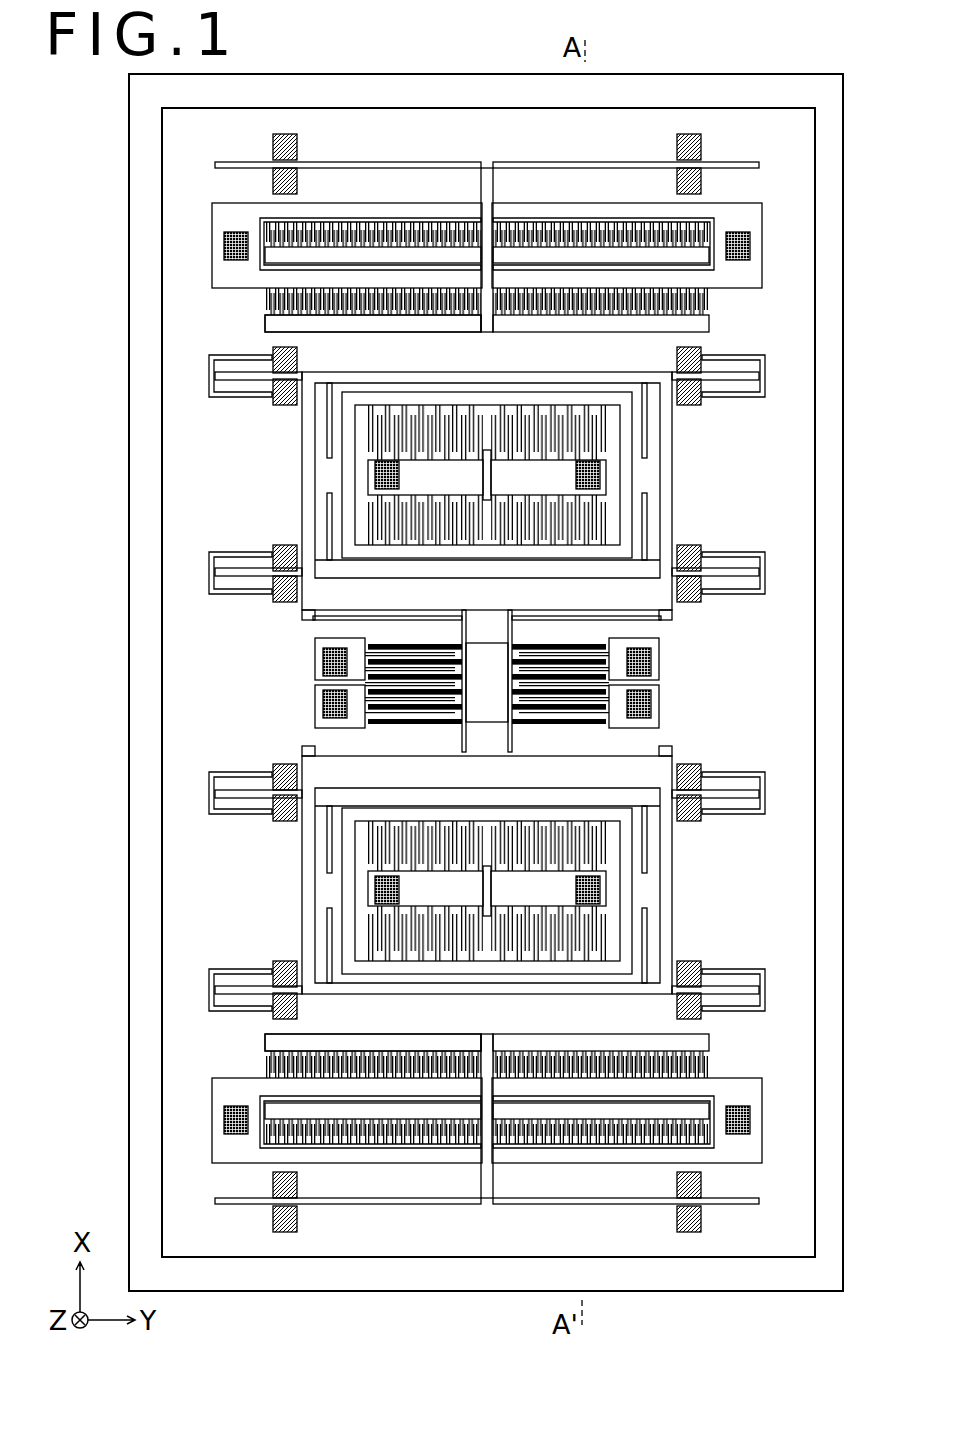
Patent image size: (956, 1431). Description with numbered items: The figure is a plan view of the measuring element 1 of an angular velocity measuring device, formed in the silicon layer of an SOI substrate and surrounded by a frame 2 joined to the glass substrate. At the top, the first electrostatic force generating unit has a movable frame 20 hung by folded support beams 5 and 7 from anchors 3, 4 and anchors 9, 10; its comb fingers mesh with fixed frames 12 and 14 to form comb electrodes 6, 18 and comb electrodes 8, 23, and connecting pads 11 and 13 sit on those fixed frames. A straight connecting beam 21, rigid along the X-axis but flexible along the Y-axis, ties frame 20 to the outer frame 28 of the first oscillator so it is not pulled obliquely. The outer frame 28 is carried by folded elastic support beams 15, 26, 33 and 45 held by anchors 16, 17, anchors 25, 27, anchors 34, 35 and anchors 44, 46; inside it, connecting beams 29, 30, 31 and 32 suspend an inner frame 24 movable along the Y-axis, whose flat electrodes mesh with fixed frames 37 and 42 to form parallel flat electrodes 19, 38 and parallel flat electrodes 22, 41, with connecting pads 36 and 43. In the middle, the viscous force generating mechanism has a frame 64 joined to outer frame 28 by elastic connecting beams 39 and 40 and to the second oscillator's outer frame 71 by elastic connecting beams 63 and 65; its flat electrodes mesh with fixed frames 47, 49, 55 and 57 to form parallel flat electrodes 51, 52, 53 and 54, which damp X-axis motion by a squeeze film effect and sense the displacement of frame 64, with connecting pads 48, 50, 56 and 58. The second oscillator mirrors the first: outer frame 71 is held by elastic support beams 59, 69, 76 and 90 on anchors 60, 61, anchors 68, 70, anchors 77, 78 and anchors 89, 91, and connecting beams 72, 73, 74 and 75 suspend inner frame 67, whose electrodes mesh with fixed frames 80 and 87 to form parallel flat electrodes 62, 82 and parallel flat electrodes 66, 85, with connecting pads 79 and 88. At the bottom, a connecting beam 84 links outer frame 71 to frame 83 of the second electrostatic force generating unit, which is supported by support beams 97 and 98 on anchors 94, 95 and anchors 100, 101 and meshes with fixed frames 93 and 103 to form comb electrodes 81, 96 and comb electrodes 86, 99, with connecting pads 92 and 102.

The measuring element 1 is at (645, 74).
The frame 2 is at (743, 108).
The anchor 3 is at (299, 148).
The anchor 4 is at (299, 181).
The support beam 5 is at (413, 162).
The comb electrode 6 is at (400, 222).
The support beam 7 is at (560, 162).
The comb electrode 8 is at (574, 222).
The anchor 9 is at (677, 147).
The anchor 10 is at (677, 181).
The connecting pad 11 is at (224, 238).
The frame 12 is at (222, 273).
The connecting pad 13 is at (750, 240).
The frame 14 is at (752, 273).
The elastic support beam 15 is at (209, 375).
The anchor 16 is at (273, 355).
The anchor 17 is at (273, 400).
The comb electrode 18 is at (383, 312).
The parallel flat electrode 19 is at (432, 410).
The frame 20 is at (470, 325).
The connecting beam 21 is at (493, 346).
The parallel flat electrode 22 is at (535, 410).
The comb electrode 23 is at (590, 315).
The inner frame 24 is at (623, 400).
The anchor 25 is at (702, 355).
The elastic support beam 26 is at (765, 375).
The anchor 27 is at (702, 400).
The outer frame 28 is at (302, 468).
The connecting beam 29 is at (327, 440).
The connecting beam 30 is at (327, 515).
The connecting beam 31 is at (647, 440).
The connecting beam 32 is at (647, 515).
The elastic support beam 33 is at (209, 560).
The anchor 34 is at (273, 552).
The anchor 35 is at (273, 600).
The connecting pad 36 is at (375, 475).
The frame 37 is at (407, 500).
The parallel flat electrode 38 is at (437, 515).
The elastic connecting beam 39 is at (430, 616).
The elastic connecting beam 40 is at (545, 616).
The parallel flat electrode 41 is at (545, 515).
The frame 42 is at (567, 500).
The connecting pad 43 is at (600, 475).
The anchor 44 is at (702, 552).
The elastic support beam 45 is at (765, 560).
The anchor 46 is at (702, 600).
The frame 47 is at (320, 640).
The connecting pad 48 is at (323, 662).
The frame 49 is at (323, 704).
The connecting pad 50 is at (320, 724).
The parallel flat electrode 51 is at (415, 645).
The parallel flat electrode 52 is at (415, 724).
The parallel flat electrode 53 is at (559, 645).
The parallel flat electrode 54 is at (559, 724).
The frame 55 is at (654, 640).
The connecting pad 56 is at (651, 662).
The frame 57 is at (651, 704).
The connecting pad 58 is at (654, 724).
The elastic support beam 59 is at (209, 783).
The anchor 60 is at (273, 770).
The anchor 61 is at (273, 818).
The parallel flat electrode 62 is at (402, 835).
The elastic connecting beam 63 is at (462, 752).
The frame 64 is at (487, 722).
The elastic connecting beam 65 is at (512, 752).
The parallel flat electrode 66 is at (556, 835).
The inner frame 67 is at (618, 808).
The anchor 68 is at (702, 770).
The elastic support beam 69 is at (765, 783).
The anchor 70 is at (702, 818).
The outer frame 71 is at (302, 900).
The connecting beam 72 is at (327, 848).
The connecting beam 73 is at (327, 923).
The connecting beam 74 is at (647, 848).
The connecting beam 75 is at (647, 923).
The elastic support beam 76 is at (209, 990).
The anchor 77 is at (273, 968).
The anchor 78 is at (273, 1012).
The connecting pad 79 is at (375, 890).
The frame 80 is at (405, 880).
The comb electrode 81 is at (353, 1054).
The parallel flat electrode 82 is at (443, 930).
The frame 83 is at (445, 1051).
The connecting beam 84 is at (493, 1021).
The parallel flat electrode 85 is at (531, 930).
The comb electrode 86 is at (607, 1054).
The frame 87 is at (569, 880).
The connecting pad 88 is at (600, 890).
The anchor 89 is at (702, 968).
The elastic support beam 90 is at (765, 990).
The anchor 91 is at (702, 1012).
The connecting pad 92 is at (224, 1130).
The frame 93 is at (222, 1095).
The anchor 94 is at (299, 1185).
The anchor 95 is at (299, 1219).
The comb electrode 96 is at (398, 1145).
The support beam 97 is at (412, 1204).
The support beam 98 is at (553, 1204).
The comb electrode 99 is at (570, 1145).
The anchor 100 is at (677, 1185).
The anchor 101 is at (677, 1219).
The connecting pad 102 is at (750, 1115).
The frame 103 is at (748, 1152).